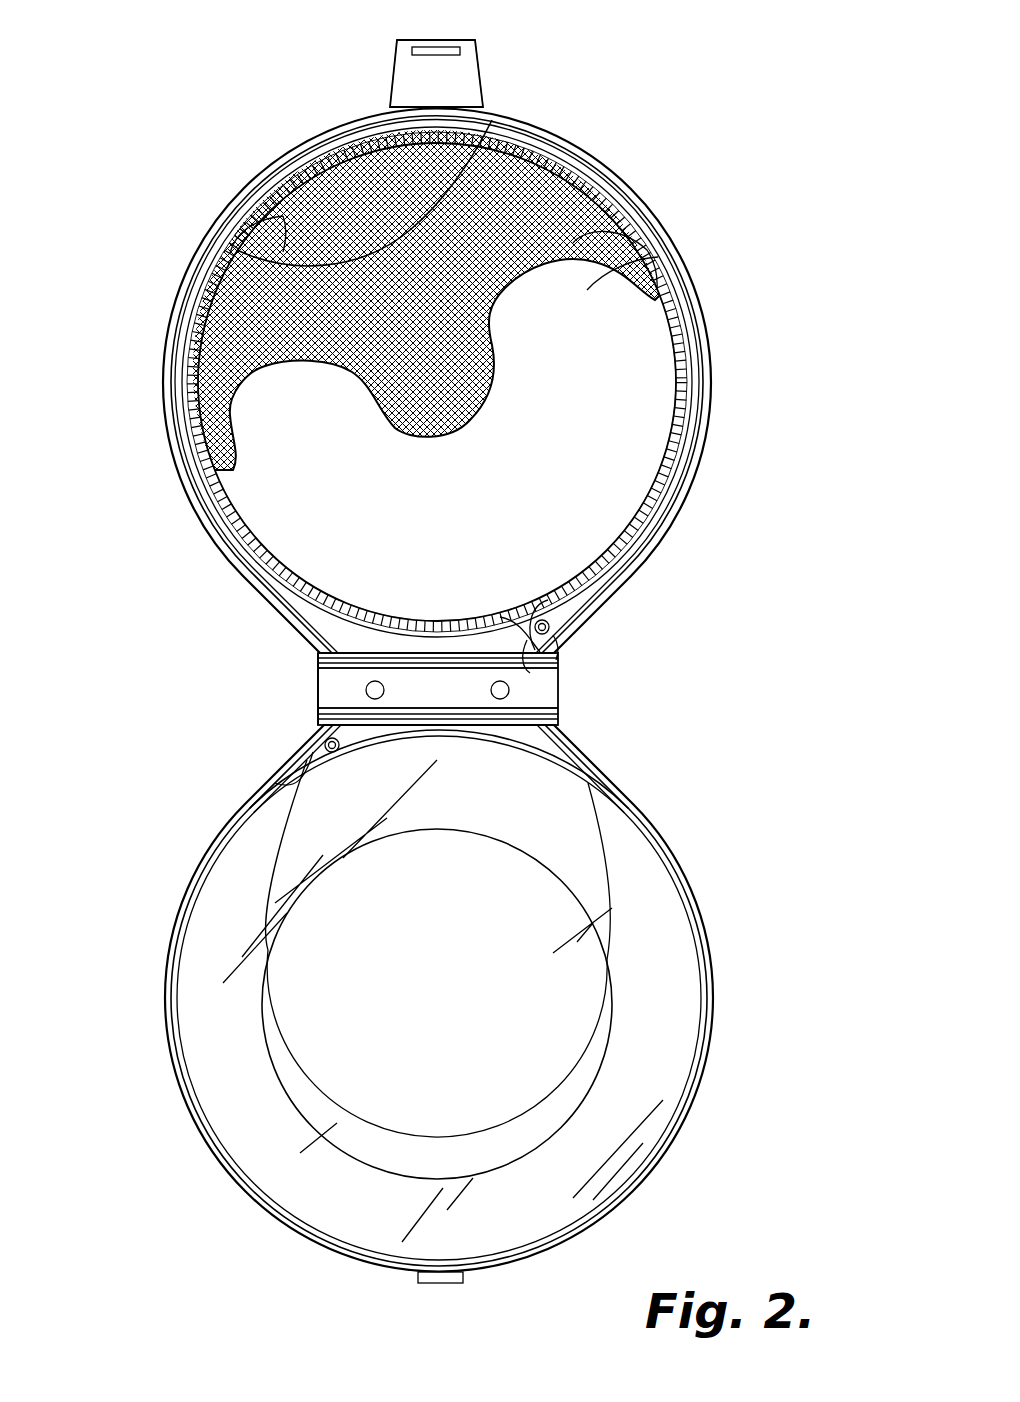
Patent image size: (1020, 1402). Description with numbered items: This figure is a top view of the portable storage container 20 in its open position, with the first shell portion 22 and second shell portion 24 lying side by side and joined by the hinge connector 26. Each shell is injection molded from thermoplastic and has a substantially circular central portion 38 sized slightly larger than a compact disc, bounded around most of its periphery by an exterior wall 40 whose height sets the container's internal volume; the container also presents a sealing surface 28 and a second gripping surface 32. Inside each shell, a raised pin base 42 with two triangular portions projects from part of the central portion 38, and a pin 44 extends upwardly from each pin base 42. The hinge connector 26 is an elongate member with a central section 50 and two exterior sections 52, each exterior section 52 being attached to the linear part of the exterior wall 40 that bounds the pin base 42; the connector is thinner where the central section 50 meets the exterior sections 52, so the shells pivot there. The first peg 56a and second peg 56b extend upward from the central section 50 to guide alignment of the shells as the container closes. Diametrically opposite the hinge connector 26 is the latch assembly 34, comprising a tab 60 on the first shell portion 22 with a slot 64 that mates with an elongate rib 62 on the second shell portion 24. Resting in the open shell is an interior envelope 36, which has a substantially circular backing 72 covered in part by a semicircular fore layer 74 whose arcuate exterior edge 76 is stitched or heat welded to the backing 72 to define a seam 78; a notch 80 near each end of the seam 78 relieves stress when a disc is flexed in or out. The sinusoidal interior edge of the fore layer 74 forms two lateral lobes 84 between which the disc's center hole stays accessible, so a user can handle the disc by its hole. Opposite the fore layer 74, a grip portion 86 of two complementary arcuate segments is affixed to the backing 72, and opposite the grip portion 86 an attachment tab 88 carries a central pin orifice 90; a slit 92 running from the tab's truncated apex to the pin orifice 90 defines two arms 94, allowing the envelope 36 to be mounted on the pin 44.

The storage container 20 is at (222, 633).
The first shell portion 22 is at (665, 528).
The second shell portion 24 is at (653, 827).
The hinge connector 26 is at (558, 698).
The sealing surface 28 is at (716, 1024).
The second gripping surface 32 is at (292, 1106).
The latch assembly 34 is at (386, 80).
The interior envelope 36 is at (618, 217).
The central portion 38 is at (593, 985).
The exterior wall 40 is at (178, 935).
The pin base 42 is at (332, 630).
The pin 44 is at (550, 633).
The central section 50 is at (318, 693).
The exterior section 52 is at (332, 665).
The first peg 56a is at (367, 698).
The second peg 56b is at (508, 699).
The tab 60 is at (483, 80).
The rib 62 is at (444, 1284).
The slot 64 is at (445, 50).
The backing 72 is at (540, 200).
The fore layer 74 is at (660, 355).
The arcuate exterior edge 76 is at (578, 237).
The seam 78 is at (655, 375).
The notch 80 is at (672, 315).
The lobe 84 is at (590, 290).
The grip portion 86 is at (280, 197).
The attachment tab 88 is at (555, 618).
The pin orifice 90 is at (578, 600).
The slit 92 is at (553, 635).
The arm 94 is at (548, 630).